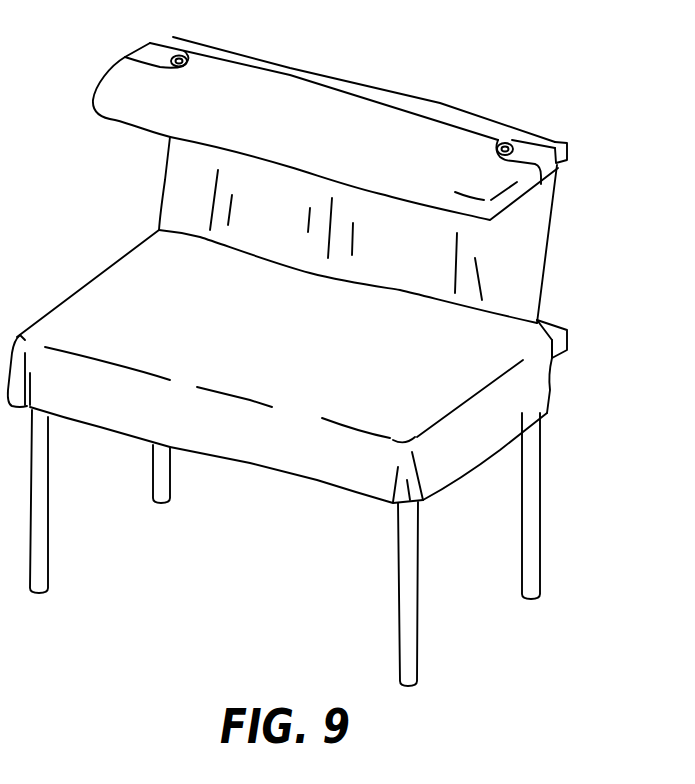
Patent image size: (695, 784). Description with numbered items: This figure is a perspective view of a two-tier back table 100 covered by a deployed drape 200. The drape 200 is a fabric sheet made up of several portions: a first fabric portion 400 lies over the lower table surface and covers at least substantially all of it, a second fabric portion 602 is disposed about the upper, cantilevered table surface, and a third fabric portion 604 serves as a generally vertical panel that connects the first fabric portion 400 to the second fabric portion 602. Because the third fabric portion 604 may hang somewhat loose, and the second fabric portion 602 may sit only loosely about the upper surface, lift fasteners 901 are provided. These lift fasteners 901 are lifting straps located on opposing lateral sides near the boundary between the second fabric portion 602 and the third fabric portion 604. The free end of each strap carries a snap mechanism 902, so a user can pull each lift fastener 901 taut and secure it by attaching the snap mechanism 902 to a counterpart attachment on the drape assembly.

The two-tier back table 100 is at (258, 644).
The drape 200 is at (232, 440).
The first fabric portion 400 is at (306, 349).
The second fabric portion 602 is at (343, 107).
The third fabric portion 604 is at (190, 180).
The lift fastener 901 is at (148, 52).
The snap mechanism 902 is at (507, 145).